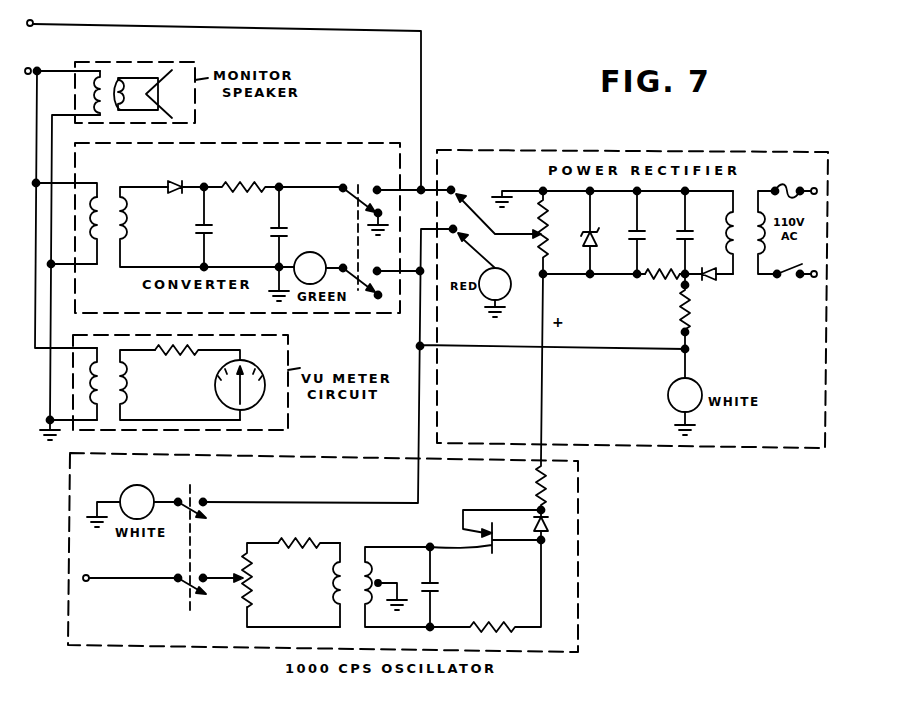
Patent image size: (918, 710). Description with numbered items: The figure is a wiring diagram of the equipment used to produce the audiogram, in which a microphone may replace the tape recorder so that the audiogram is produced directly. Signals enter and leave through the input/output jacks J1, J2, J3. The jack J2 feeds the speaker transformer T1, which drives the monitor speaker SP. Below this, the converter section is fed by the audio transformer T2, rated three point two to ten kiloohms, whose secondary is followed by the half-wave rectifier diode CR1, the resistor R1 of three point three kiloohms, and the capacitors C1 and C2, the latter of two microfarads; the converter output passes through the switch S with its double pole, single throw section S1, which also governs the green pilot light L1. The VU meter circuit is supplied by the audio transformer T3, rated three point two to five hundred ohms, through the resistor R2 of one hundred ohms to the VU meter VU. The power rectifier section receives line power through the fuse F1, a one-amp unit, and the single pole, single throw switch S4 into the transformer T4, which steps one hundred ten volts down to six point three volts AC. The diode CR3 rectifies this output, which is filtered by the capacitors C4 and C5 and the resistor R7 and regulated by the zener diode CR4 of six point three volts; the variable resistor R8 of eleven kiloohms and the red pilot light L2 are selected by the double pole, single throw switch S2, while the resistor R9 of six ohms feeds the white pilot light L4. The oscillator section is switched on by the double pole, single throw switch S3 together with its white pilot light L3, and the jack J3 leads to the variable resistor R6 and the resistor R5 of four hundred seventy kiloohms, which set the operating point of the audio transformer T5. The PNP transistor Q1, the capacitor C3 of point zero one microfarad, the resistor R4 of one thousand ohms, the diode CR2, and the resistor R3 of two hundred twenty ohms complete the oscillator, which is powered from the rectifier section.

The input/output jack J1 is at (36, 35).
The input/output jack J2 is at (39, 84).
The input/output jack J3 is at (127, 592).
The speaker transformer T1 is at (101, 94).
The monitor speaker SP is at (148, 94).
The audio transformer T2 is at (147, 227).
The diode CR1 is at (177, 197).
The resistor R1 is at (241, 201).
The capacitor C1 is at (216, 227).
The capacitor C2 is at (258, 227).
The switch S is at (363, 227).
The double pole, single throw switch S1 is at (350, 240).
The green pilot light L1 is at (311, 268).
The audio transformer T3 is at (165, 384).
The resistor R2 is at (197, 366).
The VU meter VU is at (240, 390).
The double pole, single throw switch S2 is at (509, 263).
The red pilot light L2 is at (495, 292).
The variable resistor R8 is at (520, 232).
The zener diode CR4 is at (573, 232).
The capacitor C5 is at (630, 232).
The capacitor C4 is at (694, 232).
The resistor R7 is at (661, 288).
The diode CR3 is at (708, 287).
The transformer T4 is at (756, 232).
The fuse F1 is at (795, 182).
The single pole, single throw switch S4 is at (796, 288).
The resistor R9 is at (699, 313).
The white pilot light L4 is at (685, 392).
The white pilot light L3 is at (132, 506).
The double pole, single throw switch S3 is at (211, 562).
The variable resistor R6 is at (271, 585).
The resistor R5 is at (309, 532).
The audio transformer T5 is at (368, 585).
The capacitor C3 is at (442, 587).
The transistor Q1 is at (485, 541).
The resistor R4 is at (485, 586).
The diode CR2 is at (555, 532).
The resistor R3 is at (552, 485).